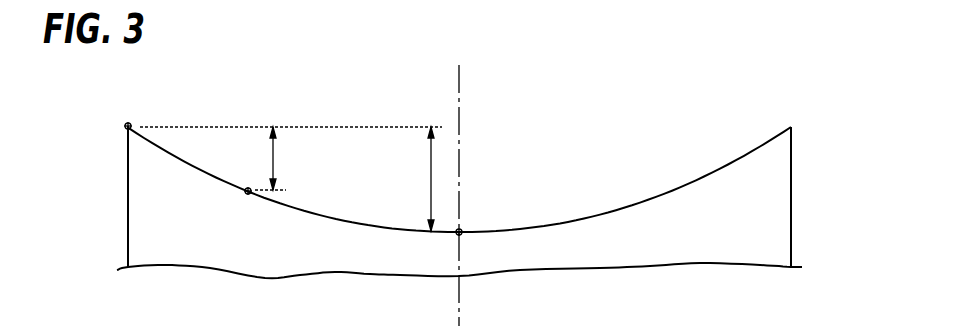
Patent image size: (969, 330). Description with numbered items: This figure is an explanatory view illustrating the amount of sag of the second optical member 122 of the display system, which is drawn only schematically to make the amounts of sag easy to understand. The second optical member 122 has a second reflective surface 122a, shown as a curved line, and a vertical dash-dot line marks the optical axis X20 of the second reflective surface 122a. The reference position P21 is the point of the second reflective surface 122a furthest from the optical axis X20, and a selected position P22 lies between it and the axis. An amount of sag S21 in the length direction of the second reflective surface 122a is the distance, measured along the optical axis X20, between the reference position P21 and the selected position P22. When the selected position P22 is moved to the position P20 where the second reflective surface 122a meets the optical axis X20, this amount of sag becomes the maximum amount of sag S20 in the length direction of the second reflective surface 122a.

The second optical member 122 is at (779, 205).
The second reflective surface 122a is at (673, 188).
The optical axis X20 is at (459, 180).
The position on the optical axis P20 is at (481, 215).
The reference position P21 is at (127, 108).
The selected position P22 is at (246, 209).
The maximum amount of sag S20 is at (409, 179).
The amount of sag S21 is at (291, 158).